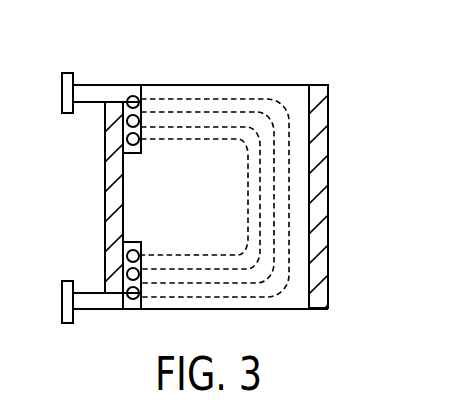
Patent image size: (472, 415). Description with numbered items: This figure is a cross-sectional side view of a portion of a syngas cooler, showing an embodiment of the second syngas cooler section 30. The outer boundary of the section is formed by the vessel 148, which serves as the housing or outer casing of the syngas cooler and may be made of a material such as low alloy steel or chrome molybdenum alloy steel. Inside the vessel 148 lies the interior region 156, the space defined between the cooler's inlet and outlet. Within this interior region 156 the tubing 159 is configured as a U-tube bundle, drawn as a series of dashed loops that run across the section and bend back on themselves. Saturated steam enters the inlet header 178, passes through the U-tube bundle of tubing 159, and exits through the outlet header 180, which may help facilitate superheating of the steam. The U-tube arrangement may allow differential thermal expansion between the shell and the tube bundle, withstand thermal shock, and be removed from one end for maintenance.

The second syngas cooler section 30 is at (331, 54).
The vessel 148 is at (328, 177).
The interior region 156 is at (290, 290).
The tubing 159 is at (193, 112).
The inlet header 178 is at (92, 292).
The outlet header 180 is at (92, 103).